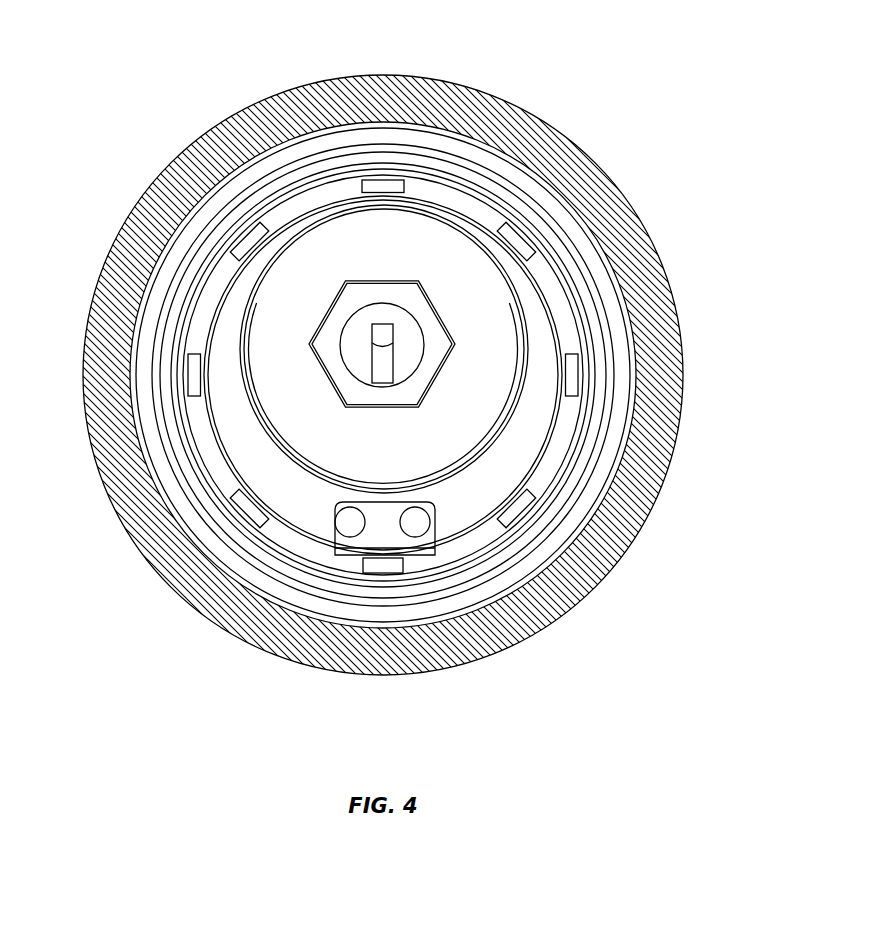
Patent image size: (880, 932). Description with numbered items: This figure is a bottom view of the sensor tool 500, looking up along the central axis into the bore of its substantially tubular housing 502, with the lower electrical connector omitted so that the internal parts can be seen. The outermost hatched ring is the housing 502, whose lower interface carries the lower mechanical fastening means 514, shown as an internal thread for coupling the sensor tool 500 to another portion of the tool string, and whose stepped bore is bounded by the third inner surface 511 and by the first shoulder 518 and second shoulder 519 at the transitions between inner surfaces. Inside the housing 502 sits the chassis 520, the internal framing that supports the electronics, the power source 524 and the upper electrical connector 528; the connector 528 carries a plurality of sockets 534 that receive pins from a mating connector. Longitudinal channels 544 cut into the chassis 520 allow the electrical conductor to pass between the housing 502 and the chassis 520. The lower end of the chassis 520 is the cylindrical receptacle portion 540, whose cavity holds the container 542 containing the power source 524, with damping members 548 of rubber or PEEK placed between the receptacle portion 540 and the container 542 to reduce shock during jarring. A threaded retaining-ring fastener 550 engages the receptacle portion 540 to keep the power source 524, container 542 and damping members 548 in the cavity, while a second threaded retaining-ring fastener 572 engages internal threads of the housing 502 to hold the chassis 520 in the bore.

The sensor tool 500 is at (136, 40).
The housing 502 is at (682, 326).
The third inner surface 511 is at (568, 525).
The lower mechanical fastening means 514 is at (622, 481).
The first shoulder 518 is at (358, 552).
The second shoulder 519 is at (613, 403).
The chassis 520 is at (235, 427).
The power source 524 is at (382, 361).
The upper electrical connector 528 is at (390, 540).
The sockets 534 is at (415, 538).
The receptacle portion 540 is at (258, 467).
The container 542 is at (332, 227).
The channels 544 is at (330, 540).
The damping members 548 is at (335, 333).
The fastener 550 is at (420, 245).
The fastener 572 is at (556, 296).